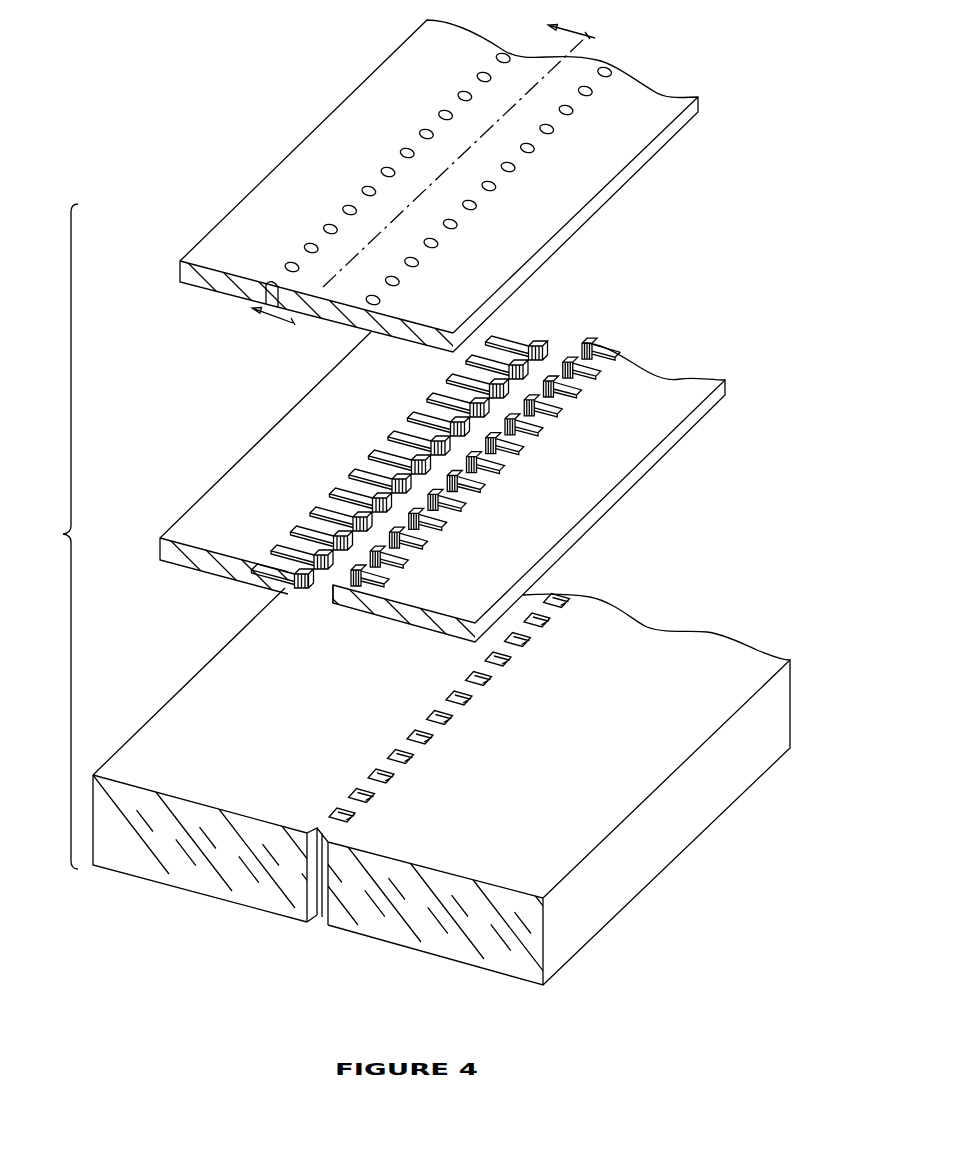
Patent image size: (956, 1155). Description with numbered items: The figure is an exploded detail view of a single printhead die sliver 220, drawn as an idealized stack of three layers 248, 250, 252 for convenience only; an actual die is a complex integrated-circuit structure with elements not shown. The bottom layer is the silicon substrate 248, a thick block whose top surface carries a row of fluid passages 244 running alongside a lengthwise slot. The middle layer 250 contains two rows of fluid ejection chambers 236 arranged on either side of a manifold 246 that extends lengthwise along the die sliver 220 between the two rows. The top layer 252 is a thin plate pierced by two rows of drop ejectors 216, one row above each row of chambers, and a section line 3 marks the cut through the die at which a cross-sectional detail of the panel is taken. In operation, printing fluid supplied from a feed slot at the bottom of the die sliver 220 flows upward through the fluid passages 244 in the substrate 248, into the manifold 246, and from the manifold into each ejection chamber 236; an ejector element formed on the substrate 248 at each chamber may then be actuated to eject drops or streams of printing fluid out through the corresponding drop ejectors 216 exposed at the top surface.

The line 3- 3 is at (432, 184).
The drop ejectors 216 is at (407, 149).
The printhead die sliver 220 is at (47, 536).
The fluid ejection chambers 236 is at (343, 487).
The fluid passages 244 is at (400, 750).
The manifold 246 is at (320, 590).
The silicon substrate 248 is at (710, 796).
The second layer 250 is at (667, 440).
The third layer 252 is at (657, 133).